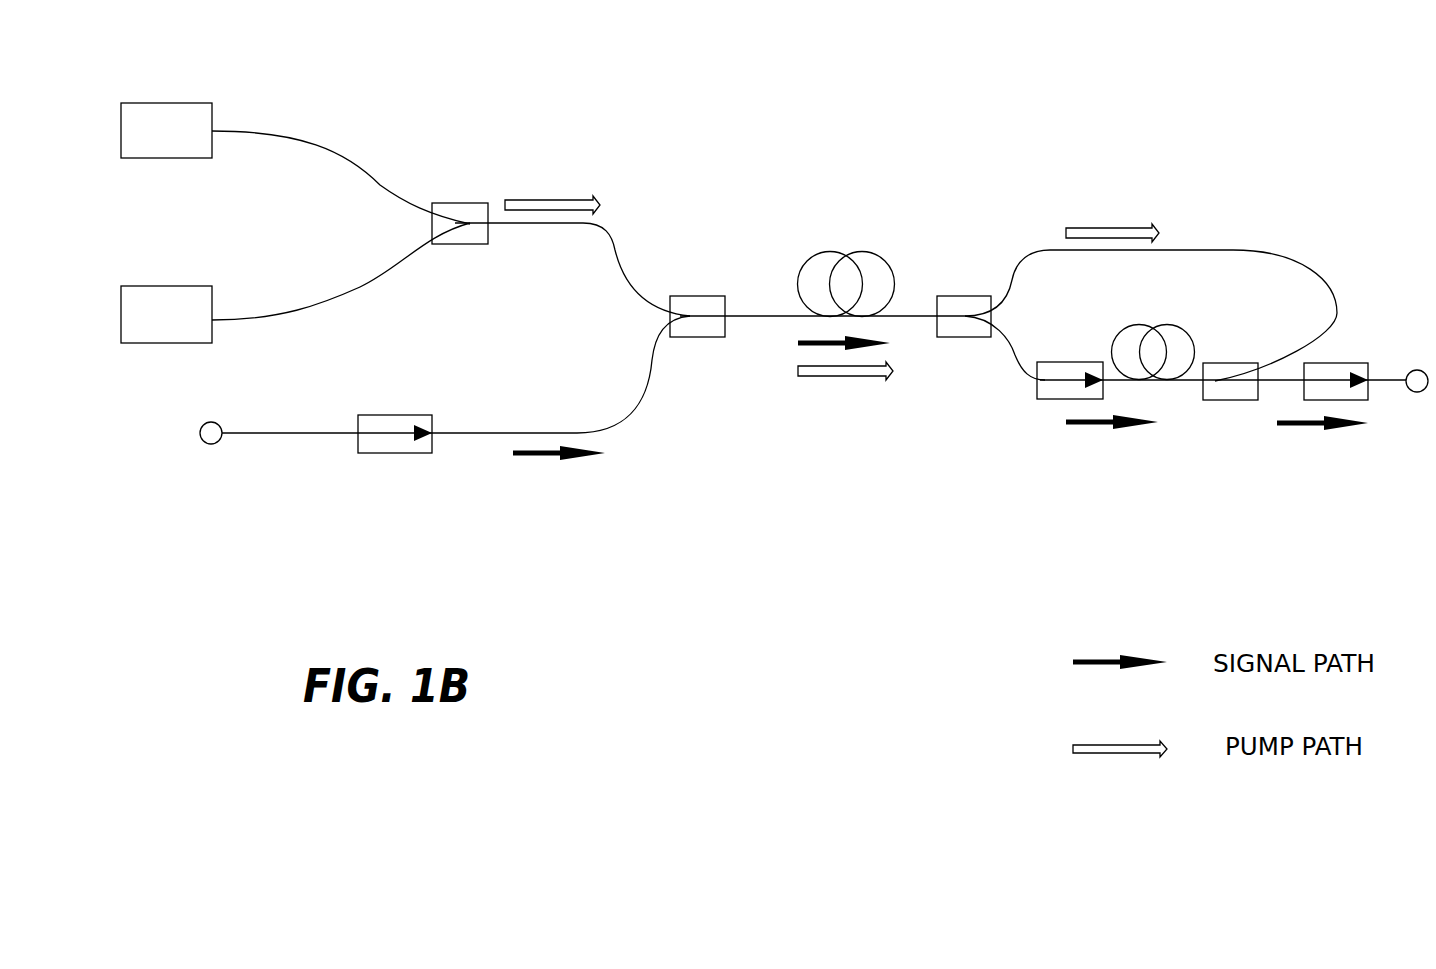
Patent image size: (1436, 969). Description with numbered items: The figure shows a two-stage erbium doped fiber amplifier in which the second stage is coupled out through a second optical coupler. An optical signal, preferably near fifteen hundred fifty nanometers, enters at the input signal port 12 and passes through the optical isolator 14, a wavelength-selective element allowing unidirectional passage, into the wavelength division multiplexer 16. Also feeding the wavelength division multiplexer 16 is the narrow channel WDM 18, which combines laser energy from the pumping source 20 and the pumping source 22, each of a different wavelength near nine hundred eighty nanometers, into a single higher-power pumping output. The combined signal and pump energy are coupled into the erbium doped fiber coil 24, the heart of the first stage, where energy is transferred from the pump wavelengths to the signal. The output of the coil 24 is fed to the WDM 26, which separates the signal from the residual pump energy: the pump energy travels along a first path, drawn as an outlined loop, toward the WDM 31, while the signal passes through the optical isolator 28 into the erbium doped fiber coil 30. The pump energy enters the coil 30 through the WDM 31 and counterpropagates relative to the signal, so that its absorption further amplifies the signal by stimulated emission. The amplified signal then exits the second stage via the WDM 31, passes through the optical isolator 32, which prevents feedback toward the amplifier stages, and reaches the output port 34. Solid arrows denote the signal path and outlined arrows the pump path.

The input signal port 12 is at (213, 453).
The optical isolator 14 is at (397, 461).
The wavelength division multiplexer 16 is at (702, 287).
The narrow channel WDM 18 is at (458, 173).
The pumping source 20 is at (174, 98).
The pumping source 22 is at (174, 281).
The erbium doped fiber coil 24 is at (838, 244).
The WDM 26 is at (968, 287).
The optical isolator 28 is at (1044, 356).
The erbium doped fiber coil 30 is at (1151, 317).
The WDM 31 is at (1242, 356).
The optical isolator 32 is at (1341, 356).
The output port 34 is at (1411, 400).